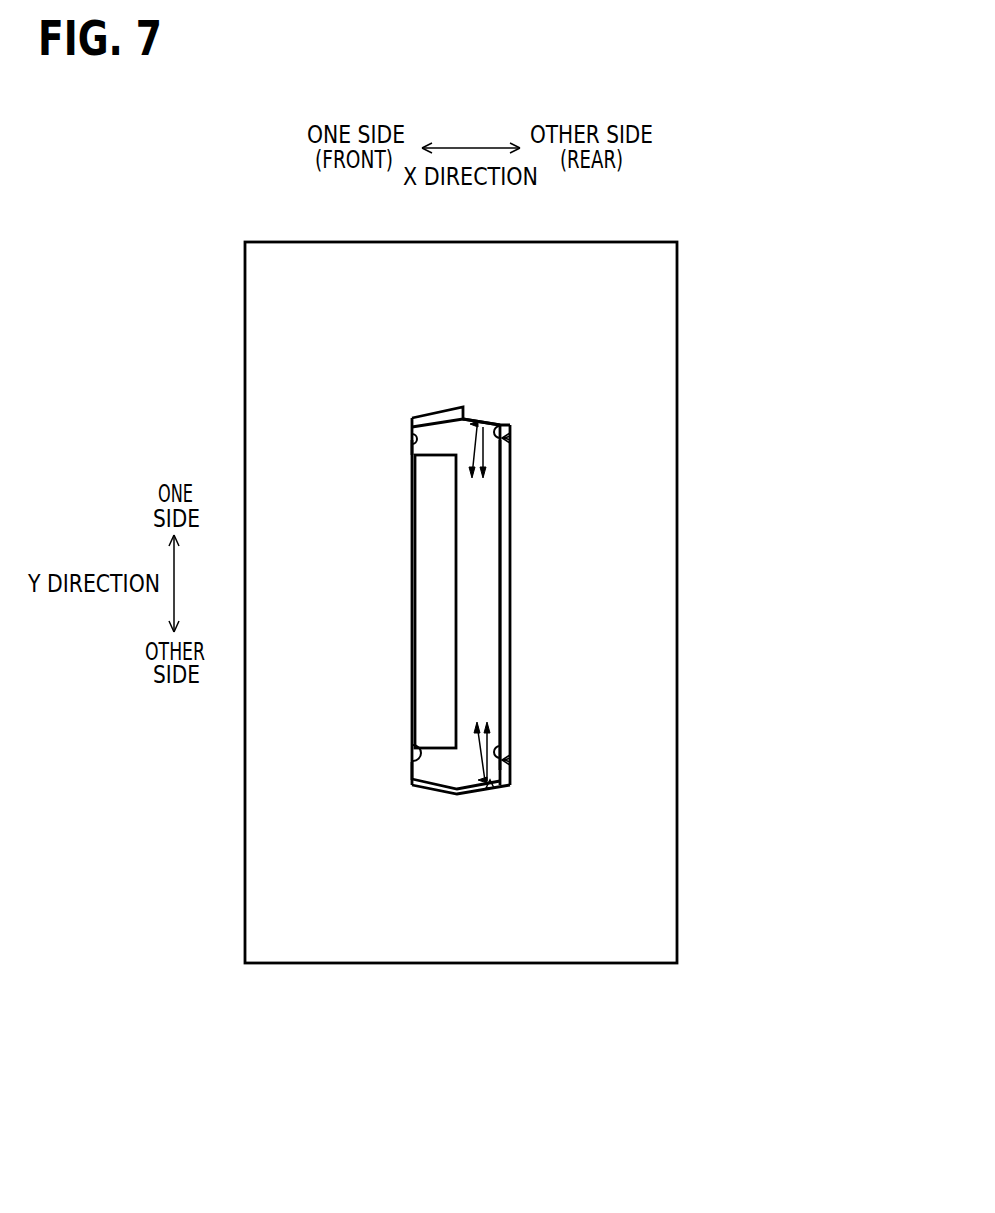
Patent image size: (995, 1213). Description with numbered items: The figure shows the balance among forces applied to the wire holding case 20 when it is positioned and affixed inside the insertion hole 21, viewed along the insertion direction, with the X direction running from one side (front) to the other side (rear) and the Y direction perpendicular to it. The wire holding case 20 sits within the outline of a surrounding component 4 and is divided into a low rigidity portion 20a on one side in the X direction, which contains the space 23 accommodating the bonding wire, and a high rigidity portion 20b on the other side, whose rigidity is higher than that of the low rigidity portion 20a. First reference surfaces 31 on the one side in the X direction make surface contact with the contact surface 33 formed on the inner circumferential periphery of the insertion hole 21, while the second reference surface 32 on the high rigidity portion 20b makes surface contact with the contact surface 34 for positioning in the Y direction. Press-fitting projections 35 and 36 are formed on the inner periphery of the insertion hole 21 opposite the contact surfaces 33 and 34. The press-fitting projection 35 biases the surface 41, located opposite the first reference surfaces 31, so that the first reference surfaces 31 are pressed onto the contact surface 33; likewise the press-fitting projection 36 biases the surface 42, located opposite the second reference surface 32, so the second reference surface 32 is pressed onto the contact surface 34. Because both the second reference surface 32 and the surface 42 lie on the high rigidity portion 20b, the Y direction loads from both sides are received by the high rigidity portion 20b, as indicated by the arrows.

The case 4 is at (668, 533).
The wire holding case 20 is at (468, 739).
The low rigidity portion 20a is at (433, 765).
The high rigidity portion 20b is at (500, 765).
The insertion hole 21 is at (502, 552).
The space 23 is at (437, 640).
The first reference surfaces 31 is at (410, 437).
The second reference surface 32 is at (478, 424).
The contact surface 33 is at (410, 433).
The contact surface 34 is at (503, 426).
The press-fitting projection 35 is at (507, 441).
The press-fitting projection 36 is at (490, 788).
The surface 41 is at (505, 432).
The surface 42 is at (480, 781).